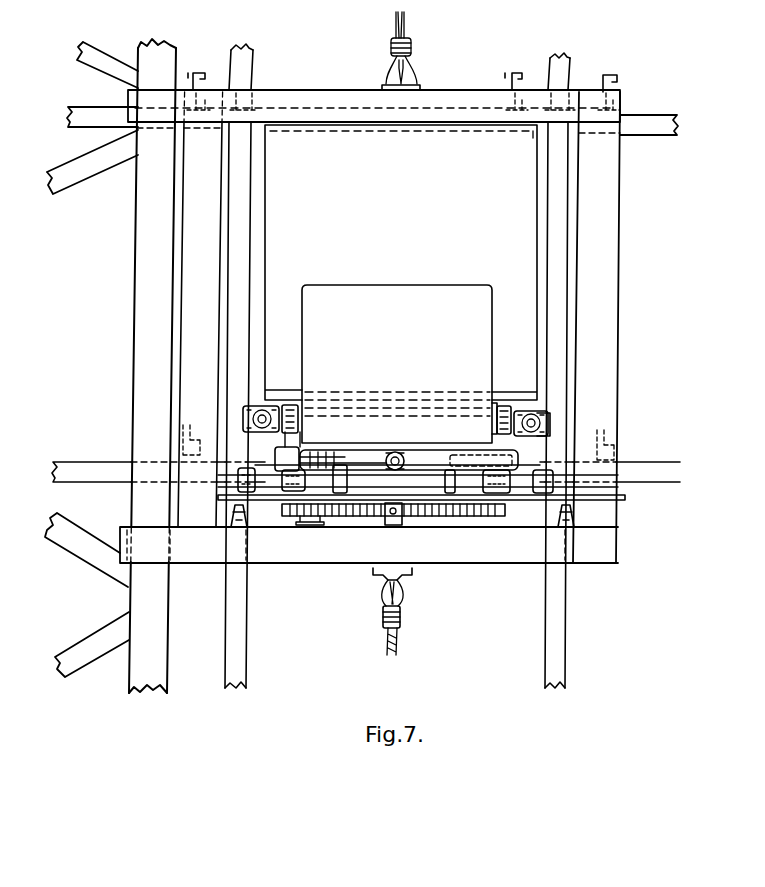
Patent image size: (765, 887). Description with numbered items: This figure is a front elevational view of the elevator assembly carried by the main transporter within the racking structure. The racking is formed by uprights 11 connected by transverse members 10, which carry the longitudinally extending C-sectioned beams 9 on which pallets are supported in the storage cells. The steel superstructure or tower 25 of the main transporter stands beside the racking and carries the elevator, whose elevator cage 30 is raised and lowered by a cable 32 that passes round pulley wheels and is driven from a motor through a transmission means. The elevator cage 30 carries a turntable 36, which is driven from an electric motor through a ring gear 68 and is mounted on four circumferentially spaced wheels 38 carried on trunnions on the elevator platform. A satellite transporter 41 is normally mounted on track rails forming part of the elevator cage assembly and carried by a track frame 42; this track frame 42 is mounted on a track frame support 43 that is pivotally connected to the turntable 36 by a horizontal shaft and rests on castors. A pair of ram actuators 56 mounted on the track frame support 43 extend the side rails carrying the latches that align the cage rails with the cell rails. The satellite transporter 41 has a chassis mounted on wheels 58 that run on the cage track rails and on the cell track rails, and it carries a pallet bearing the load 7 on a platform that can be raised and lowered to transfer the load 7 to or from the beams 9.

The load 7 is at (398, 256).
The C-sectioned beams 9 is at (193, 72).
The transverse members 10 is at (645, 115).
The uprights 11 is at (253, 58).
The tower 25 is at (134, 412).
The elevator cage 30 is at (619, 243).
The cable 32 is at (404, 633).
The turntable 36 is at (574, 505).
The wheels 38 is at (240, 527).
The satellite transporter 41 is at (401, 361).
The track frame 42 is at (508, 403).
The track frame support 43 is at (520, 462).
The ram actuators 56 is at (548, 416).
The wheels 58 is at (297, 406).
The ring gear 68 is at (446, 520).